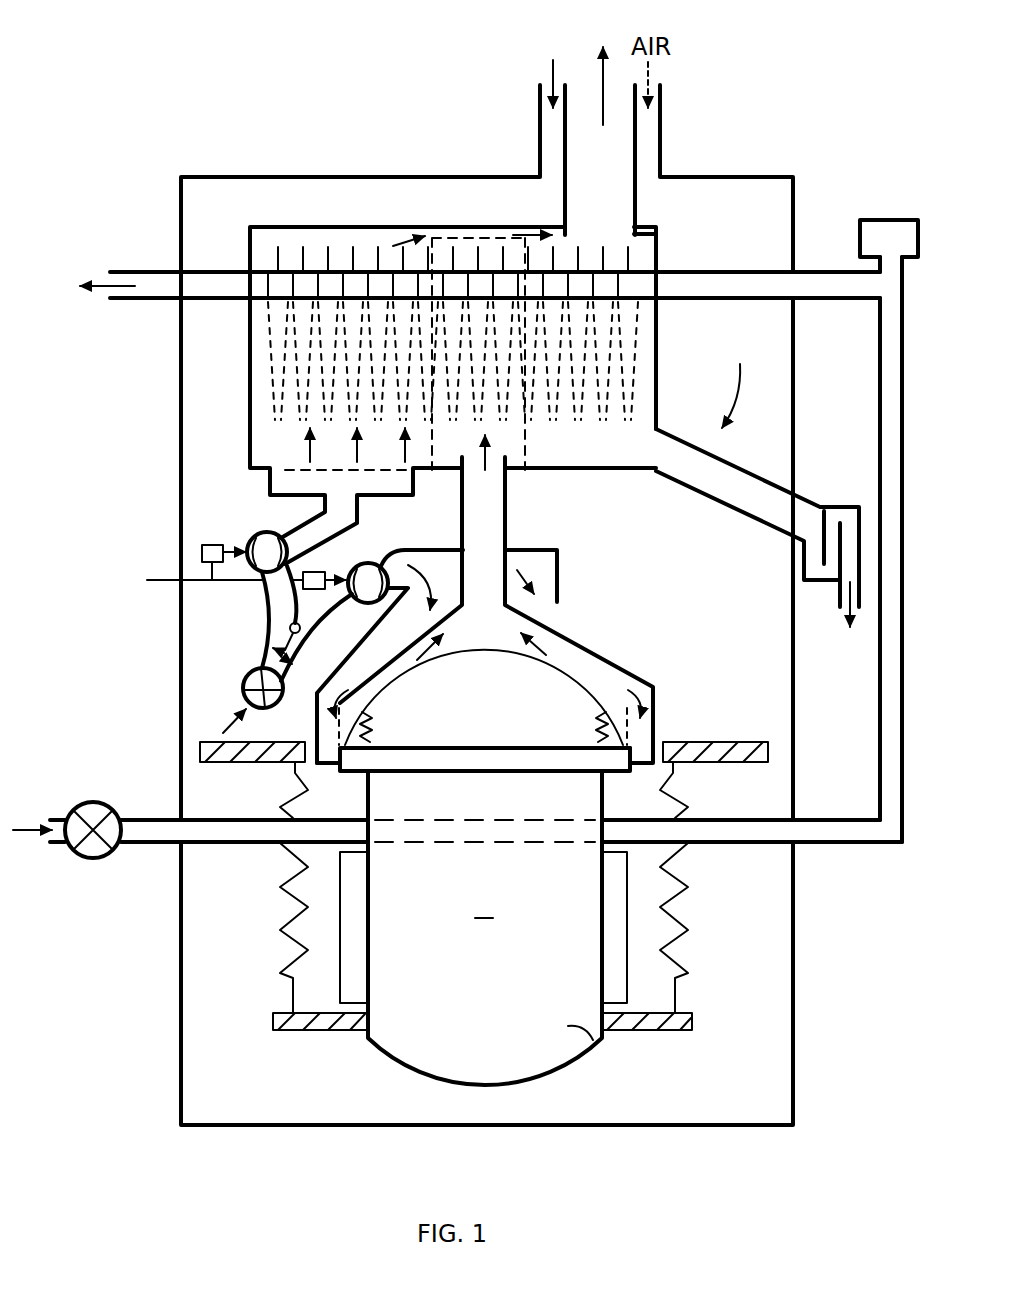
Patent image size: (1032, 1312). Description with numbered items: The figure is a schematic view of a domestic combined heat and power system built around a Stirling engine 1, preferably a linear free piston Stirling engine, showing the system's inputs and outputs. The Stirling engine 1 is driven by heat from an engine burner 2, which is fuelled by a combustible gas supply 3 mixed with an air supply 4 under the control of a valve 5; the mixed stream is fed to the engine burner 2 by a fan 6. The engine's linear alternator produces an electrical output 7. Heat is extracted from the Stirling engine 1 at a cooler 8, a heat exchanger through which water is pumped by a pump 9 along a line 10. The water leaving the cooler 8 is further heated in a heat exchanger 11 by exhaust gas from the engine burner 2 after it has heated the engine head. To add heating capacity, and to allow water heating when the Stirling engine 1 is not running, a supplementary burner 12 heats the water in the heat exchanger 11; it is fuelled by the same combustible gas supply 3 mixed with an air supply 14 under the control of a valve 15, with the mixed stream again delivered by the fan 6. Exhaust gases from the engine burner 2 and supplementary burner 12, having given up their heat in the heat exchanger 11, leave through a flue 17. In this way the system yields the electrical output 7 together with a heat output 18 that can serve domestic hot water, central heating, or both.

The Stirling engine 1 is at (485, 928).
The engine burner 2 is at (600, 710).
The combustible gas supply 3 is at (160, 578).
The air supply 4 is at (336, 610).
The valve 5 is at (373, 564).
The fan 6 is at (246, 680).
The electrical output 7 is at (572, 1030).
The cooler 8 is at (500, 847).
The pump 9 is at (88, 805).
The line 10 is at (172, 819).
The heat exchanger 11 is at (283, 226).
The supplementary burner 12 is at (285, 468).
The air supply 14 is at (270, 604).
The valve 15 is at (253, 537).
The flue 17 is at (637, 132).
The heat output 18 is at (140, 272).